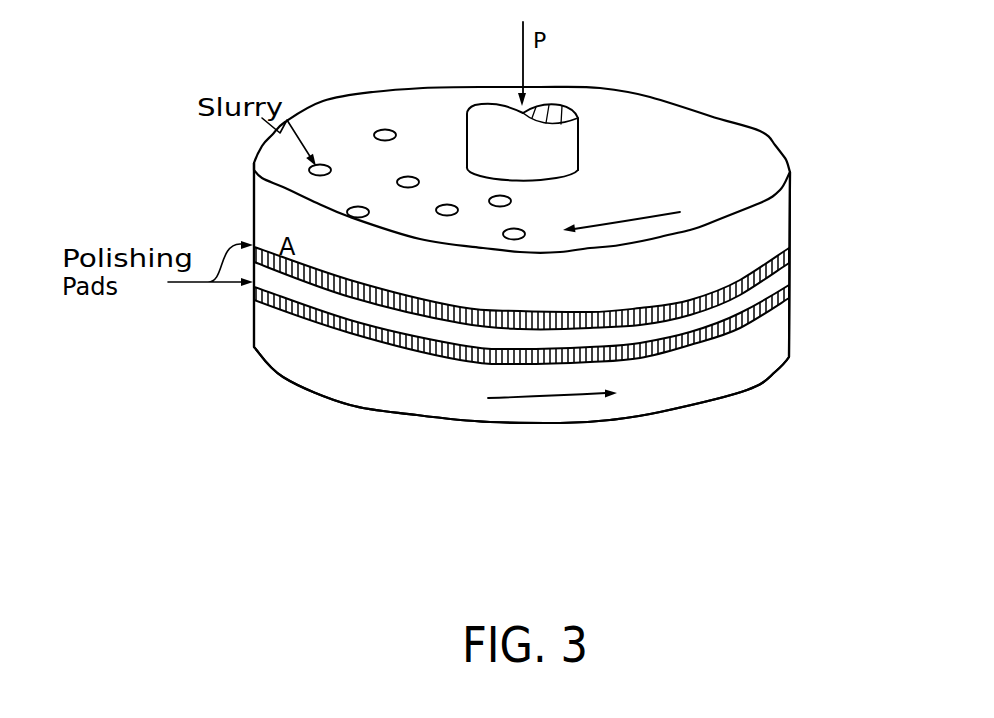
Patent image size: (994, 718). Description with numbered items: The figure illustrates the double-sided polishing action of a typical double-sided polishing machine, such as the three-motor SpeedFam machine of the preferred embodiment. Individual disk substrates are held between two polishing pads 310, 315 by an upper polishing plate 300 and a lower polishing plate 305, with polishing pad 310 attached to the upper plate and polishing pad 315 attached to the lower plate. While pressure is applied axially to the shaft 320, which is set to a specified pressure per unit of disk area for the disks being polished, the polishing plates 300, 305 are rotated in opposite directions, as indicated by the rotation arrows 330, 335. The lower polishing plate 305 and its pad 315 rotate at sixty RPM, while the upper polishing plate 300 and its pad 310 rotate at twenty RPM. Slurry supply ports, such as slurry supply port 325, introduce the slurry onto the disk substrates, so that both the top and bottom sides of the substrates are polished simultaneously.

The upper polishing plate 300 is at (763, 133).
The lower polishing plate 305 is at (790, 332).
The polishing pad 310 is at (252, 246).
The polishing pad 315 is at (257, 297).
The shaft 320 is at (556, 115).
The slurry supply port 325 is at (385, 128).
The rotation arrow 330 is at (622, 222).
The rotation arrow 335 is at (553, 400).